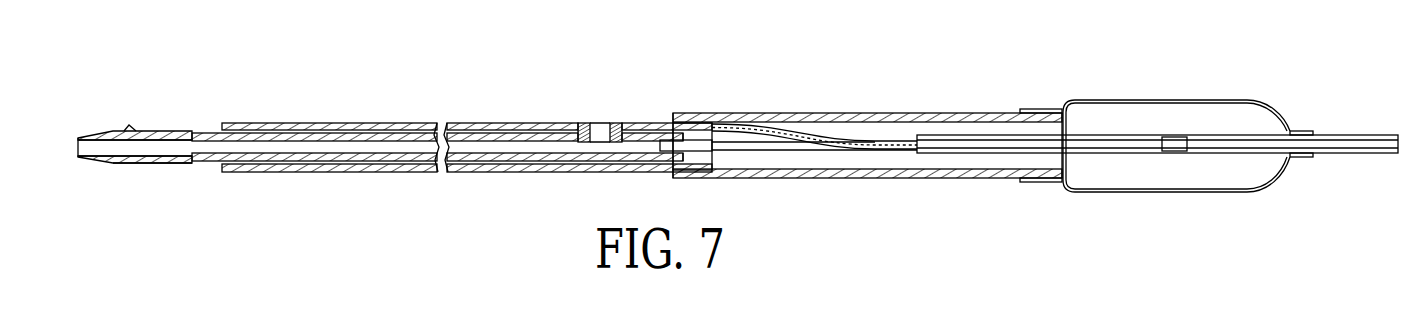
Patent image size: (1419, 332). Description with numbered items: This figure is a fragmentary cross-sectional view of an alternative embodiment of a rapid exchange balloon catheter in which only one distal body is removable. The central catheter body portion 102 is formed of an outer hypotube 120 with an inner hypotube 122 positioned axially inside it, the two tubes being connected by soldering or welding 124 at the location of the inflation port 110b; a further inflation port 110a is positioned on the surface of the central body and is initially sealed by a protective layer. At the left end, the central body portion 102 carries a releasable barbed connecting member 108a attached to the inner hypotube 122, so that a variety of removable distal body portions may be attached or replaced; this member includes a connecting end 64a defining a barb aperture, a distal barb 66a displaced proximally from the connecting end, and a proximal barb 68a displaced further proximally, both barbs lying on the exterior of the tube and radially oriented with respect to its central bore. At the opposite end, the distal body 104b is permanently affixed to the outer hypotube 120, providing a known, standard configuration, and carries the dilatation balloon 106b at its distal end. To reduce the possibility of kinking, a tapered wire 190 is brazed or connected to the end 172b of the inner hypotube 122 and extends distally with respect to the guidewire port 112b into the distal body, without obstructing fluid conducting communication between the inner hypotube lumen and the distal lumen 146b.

The connecting end 64a is at (112, 146).
The distal barb 66a is at (118, 166).
The proximal barb 68a is at (127, 165).
The barbed connecting member 108a is at (160, 135).
The central catheter body portion 102 is at (313, 167).
The inflation port 110a is at (327, 127).
The outer hypotube 120 is at (447, 123).
The inflation port 110b is at (597, 123).
The soldering or welding 124 is at (620, 127).
The inner hypotube 122 is at (557, 162).
The end of inner hypotube 172b is at (683, 158).
The second distal body 104b is at (977, 113).
The guidewire port 112b is at (793, 113).
The tapered wire 190 is at (870, 148).
The distal lumen 146b is at (945, 160).
The second dilatation balloon 106b is at (1173, 98).